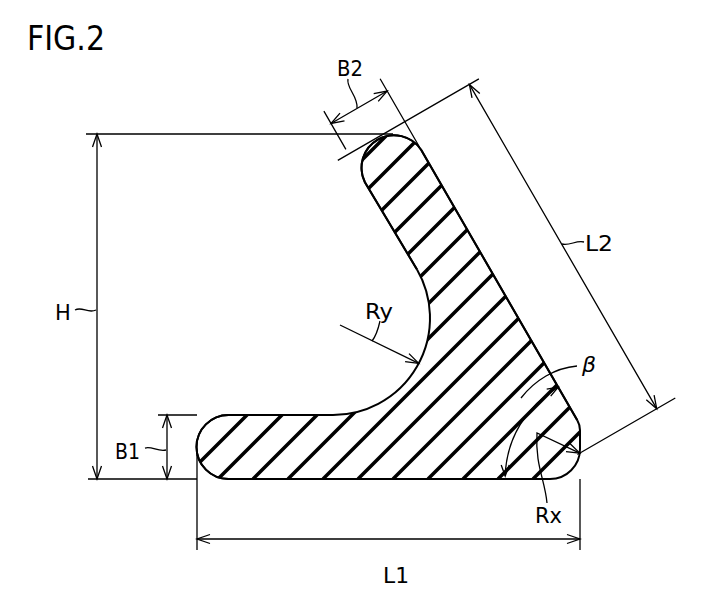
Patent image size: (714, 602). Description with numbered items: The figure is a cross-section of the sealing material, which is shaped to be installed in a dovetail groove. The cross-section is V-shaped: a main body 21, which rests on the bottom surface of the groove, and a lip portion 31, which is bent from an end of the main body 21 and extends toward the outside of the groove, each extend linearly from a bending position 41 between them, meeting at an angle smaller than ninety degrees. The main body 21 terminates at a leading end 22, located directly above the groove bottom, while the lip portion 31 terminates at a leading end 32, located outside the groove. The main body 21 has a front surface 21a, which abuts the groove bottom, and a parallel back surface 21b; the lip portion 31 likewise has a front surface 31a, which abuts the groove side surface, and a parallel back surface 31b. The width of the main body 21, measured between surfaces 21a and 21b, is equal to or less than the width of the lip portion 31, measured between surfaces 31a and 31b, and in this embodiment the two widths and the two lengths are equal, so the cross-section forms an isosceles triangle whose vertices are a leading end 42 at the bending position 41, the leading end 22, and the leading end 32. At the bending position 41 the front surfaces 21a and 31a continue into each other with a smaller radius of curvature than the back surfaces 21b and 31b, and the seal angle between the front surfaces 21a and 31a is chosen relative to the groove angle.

The main body 21 is at (247, 466).
The front surface of main body 21a is at (291, 480).
The back surface of main body 21b is at (292, 415).
The leading end of main body 22 is at (196, 447).
The lip portion 31 is at (423, 184).
The front surface of lip portion 31a is at (462, 220).
The back surface of lip portion 31b is at (399, 240).
The leading end of lip portion 32 is at (358, 140).
The bending position 41 is at (502, 412).
The leading end at bending position 42 is at (578, 453).